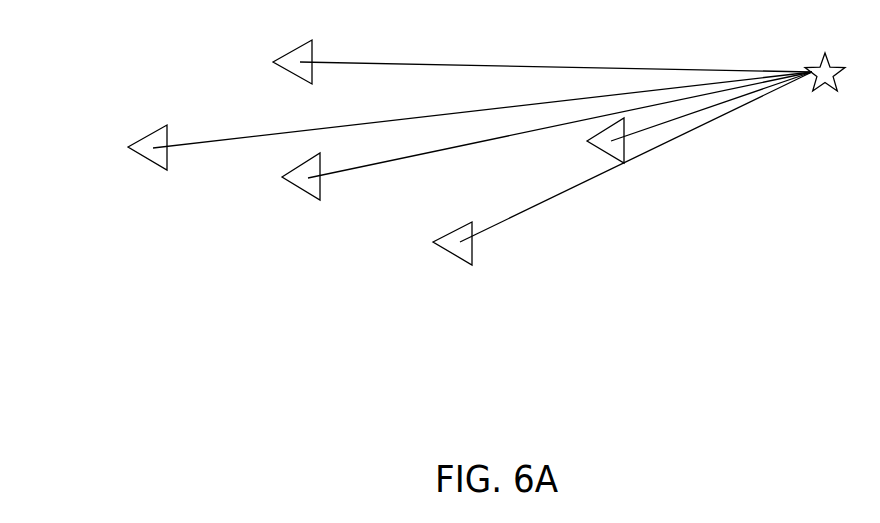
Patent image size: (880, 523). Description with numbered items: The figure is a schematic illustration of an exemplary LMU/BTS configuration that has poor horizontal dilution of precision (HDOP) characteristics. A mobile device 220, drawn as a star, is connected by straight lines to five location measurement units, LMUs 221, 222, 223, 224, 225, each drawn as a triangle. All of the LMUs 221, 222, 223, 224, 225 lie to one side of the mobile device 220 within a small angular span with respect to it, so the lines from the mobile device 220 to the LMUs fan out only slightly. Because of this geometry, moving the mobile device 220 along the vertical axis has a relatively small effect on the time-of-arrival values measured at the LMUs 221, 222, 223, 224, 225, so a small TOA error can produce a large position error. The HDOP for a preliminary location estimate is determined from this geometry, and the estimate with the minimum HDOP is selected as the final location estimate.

The mobile device 220 is at (803, 66).
The LMU 221 is at (475, 266).
The LMU 222 is at (325, 150).
The LMU 223 is at (126, 145).
The LMU 224 is at (318, 38).
The LMU 225 is at (585, 143).